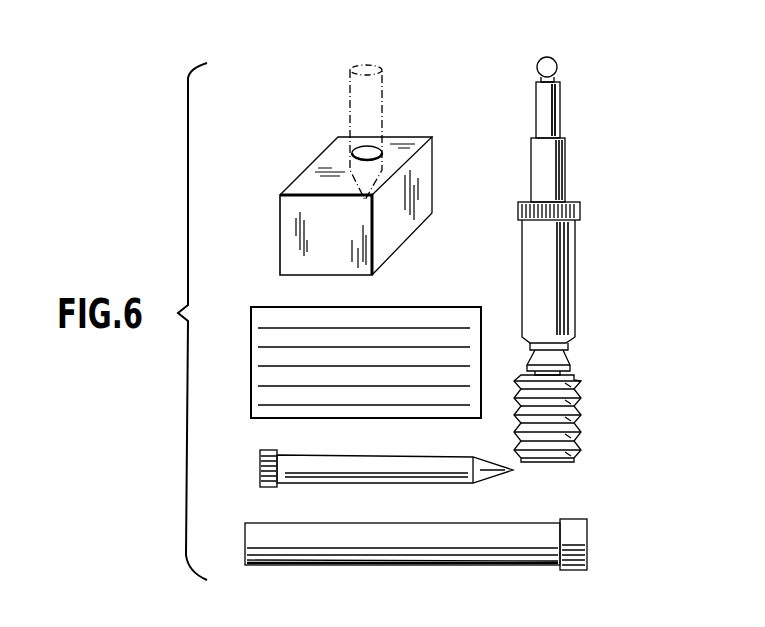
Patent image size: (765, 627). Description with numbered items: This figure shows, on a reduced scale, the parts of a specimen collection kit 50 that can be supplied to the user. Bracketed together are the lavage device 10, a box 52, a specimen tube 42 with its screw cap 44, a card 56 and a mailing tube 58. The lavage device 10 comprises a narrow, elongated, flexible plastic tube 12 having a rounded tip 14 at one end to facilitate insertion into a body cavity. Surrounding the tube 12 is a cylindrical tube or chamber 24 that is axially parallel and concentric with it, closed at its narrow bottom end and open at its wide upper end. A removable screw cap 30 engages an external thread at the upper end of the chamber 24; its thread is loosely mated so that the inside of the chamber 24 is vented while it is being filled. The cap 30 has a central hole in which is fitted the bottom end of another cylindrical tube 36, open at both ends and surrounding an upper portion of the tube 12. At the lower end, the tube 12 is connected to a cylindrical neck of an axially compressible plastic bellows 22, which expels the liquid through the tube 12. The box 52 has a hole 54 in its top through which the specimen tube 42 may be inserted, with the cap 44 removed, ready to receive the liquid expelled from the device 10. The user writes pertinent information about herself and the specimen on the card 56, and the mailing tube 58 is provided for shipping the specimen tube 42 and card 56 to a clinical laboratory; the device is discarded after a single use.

The lavage device 10 is at (576, 259).
The flexible plastic tube 12 is at (548, 118).
The rounded tip 14 is at (561, 72).
The axially compressible plastic bellows 22 is at (572, 415).
The cylindrical tube or chamber 24 is at (550, 318).
The removable screw cap 30 is at (581, 212).
The cylindrical tube 36 is at (568, 180).
The specimen tube 42 is at (349, 100).
The screw cap 44 is at (258, 465).
The specimen collection kit 50 is at (187, 180).
The box 52 is at (428, 185).
The hole 54 is at (368, 150).
The card 56 is at (447, 313).
The mailing tube 58 is at (460, 546).